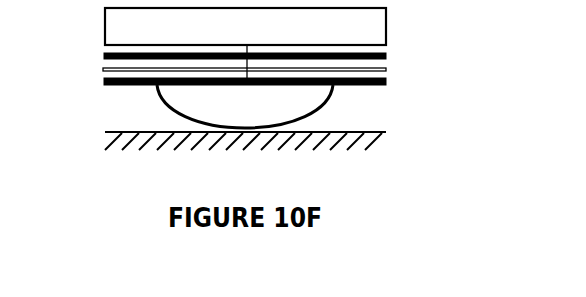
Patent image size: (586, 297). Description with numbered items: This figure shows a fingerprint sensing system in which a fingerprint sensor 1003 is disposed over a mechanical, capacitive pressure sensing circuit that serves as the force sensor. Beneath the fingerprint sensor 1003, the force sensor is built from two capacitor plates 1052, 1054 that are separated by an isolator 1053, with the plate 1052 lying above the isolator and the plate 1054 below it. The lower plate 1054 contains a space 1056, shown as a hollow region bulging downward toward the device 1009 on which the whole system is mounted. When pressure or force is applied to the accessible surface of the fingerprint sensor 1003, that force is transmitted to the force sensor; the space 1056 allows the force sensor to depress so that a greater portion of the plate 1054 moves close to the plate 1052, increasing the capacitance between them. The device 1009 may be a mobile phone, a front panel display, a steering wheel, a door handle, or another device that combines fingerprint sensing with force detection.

The fingerprint sensor 1003 is at (298, 38).
The capacitor plate 1052 is at (386, 57).
The isolator 1053 is at (102, 71).
The capacitor plate 1054 is at (386, 82).
The space 1056 is at (245, 106).
The device 1009 is at (384, 135).